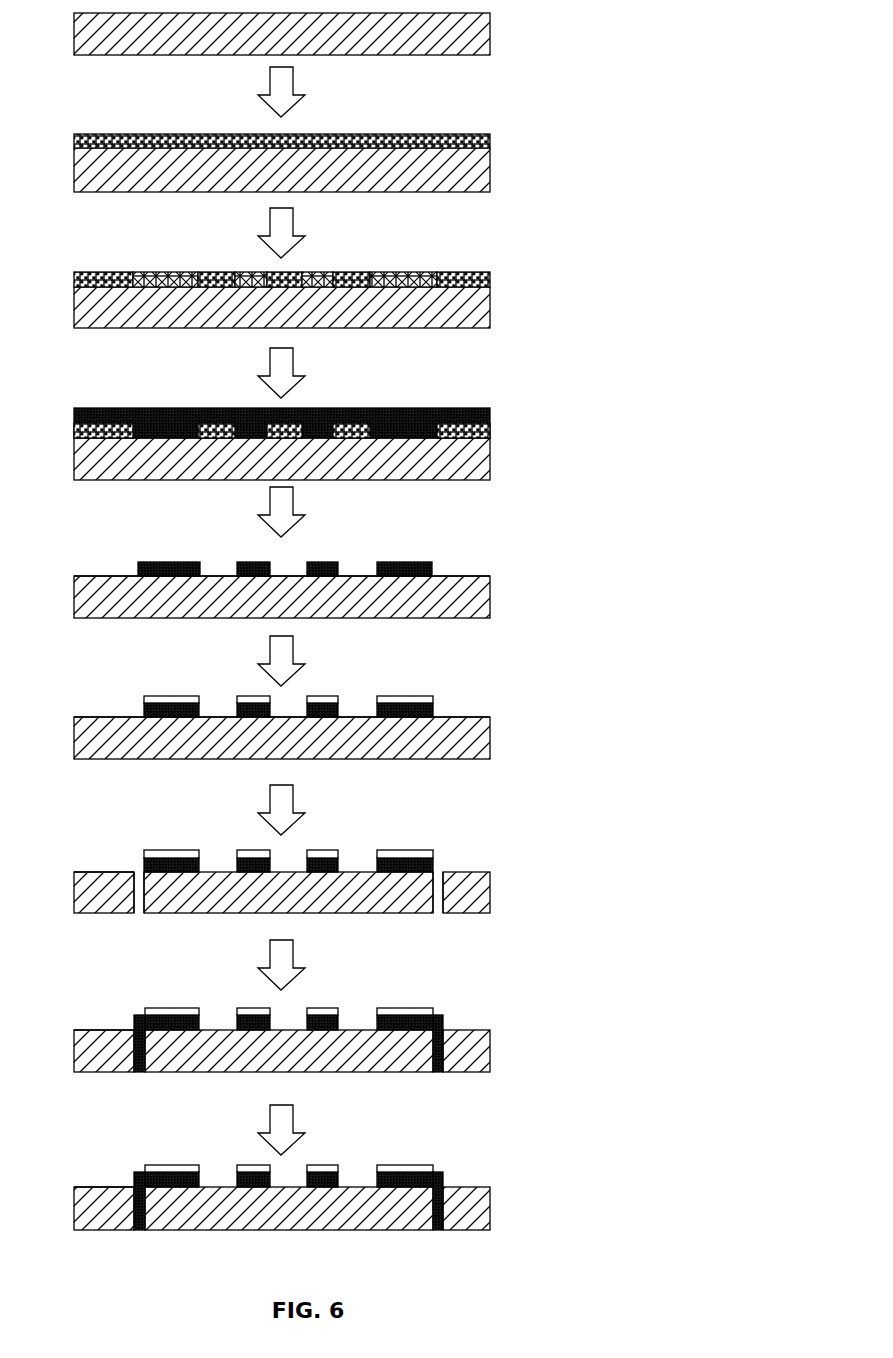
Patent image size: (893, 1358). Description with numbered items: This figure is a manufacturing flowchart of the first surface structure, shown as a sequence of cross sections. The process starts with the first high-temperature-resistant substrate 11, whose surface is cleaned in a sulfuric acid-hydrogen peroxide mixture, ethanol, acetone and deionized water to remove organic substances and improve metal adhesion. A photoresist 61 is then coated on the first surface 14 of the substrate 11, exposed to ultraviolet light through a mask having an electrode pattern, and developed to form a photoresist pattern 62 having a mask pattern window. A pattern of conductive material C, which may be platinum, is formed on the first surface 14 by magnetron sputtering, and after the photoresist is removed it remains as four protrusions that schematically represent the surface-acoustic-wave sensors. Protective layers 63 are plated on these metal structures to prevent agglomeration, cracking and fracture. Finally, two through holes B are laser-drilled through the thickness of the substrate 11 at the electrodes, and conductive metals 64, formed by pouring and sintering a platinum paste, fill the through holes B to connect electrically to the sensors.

The first high-temperature-resistant substrate 11 is at (462, 41).
The photoresist 61 is at (457, 141).
The photoresist pattern 62 is at (447, 430).
The conductive material C is at (473, 408).
The protective layer 63 is at (403, 698).
The through hole B is at (133, 878).
The conductive metal 64 is at (138, 1072).
The first surface 14 is at (107, 576).